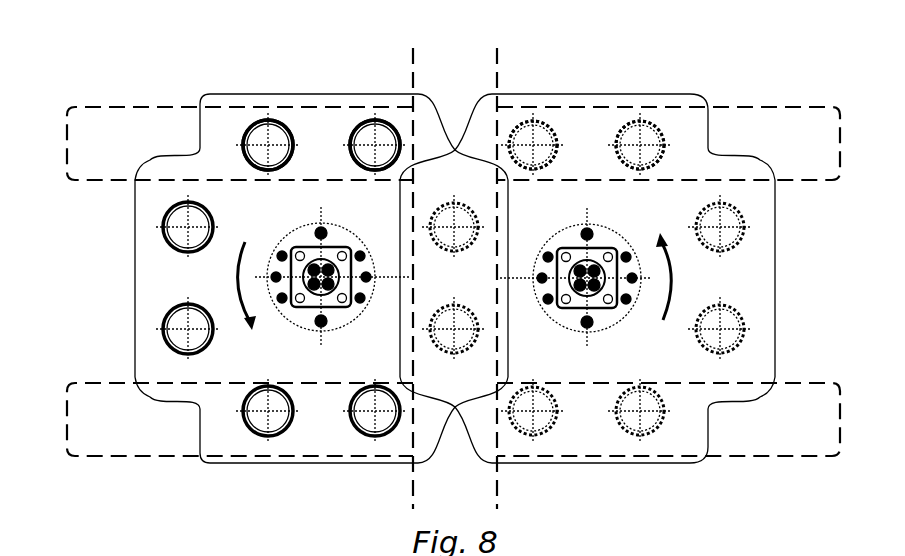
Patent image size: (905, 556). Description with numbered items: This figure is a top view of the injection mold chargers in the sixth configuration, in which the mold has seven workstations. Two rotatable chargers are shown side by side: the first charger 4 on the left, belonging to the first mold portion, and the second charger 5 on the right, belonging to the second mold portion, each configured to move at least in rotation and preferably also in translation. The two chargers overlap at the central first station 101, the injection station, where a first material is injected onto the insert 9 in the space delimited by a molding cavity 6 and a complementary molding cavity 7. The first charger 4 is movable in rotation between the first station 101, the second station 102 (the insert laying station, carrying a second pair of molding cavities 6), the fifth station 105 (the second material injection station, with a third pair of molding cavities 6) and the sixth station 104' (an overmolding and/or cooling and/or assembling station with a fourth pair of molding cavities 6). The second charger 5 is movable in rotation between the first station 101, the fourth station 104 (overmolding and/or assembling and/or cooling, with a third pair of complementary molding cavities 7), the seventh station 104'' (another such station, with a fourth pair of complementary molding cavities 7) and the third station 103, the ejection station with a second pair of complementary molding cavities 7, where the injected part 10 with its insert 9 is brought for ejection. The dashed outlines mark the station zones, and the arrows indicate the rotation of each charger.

The first movable charger 4 is at (314, 502).
The second movable charger 5 is at (593, 502).
The molding cavity 6 is at (266, 132).
The complementary molding cavity 7 is at (535, 132).
The insert 9 is at (250, 128).
The injected part 10 is at (551, 128).
The first station 101 is at (413, 48).
The second station 102 is at (67, 112).
The third station 103 is at (840, 112).
The fourth station 104 is at (852, 281).
The sixth station 104' is at (212, 419).
The seventh station 104'' is at (697, 419).
The fifth station 105 is at (92, 180).